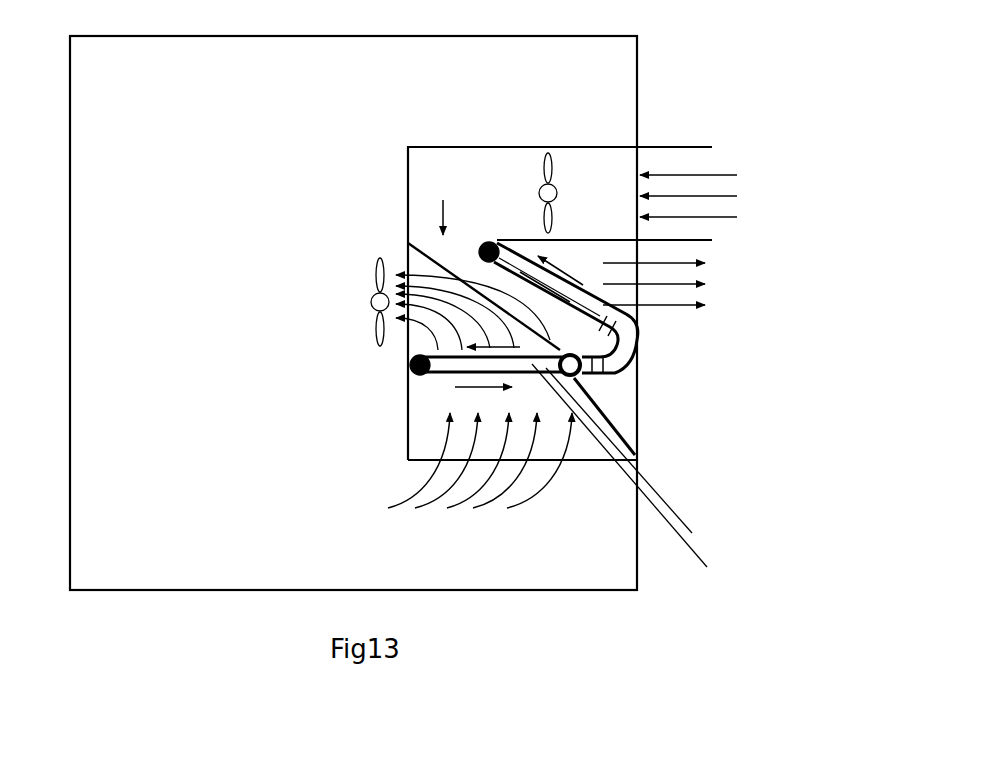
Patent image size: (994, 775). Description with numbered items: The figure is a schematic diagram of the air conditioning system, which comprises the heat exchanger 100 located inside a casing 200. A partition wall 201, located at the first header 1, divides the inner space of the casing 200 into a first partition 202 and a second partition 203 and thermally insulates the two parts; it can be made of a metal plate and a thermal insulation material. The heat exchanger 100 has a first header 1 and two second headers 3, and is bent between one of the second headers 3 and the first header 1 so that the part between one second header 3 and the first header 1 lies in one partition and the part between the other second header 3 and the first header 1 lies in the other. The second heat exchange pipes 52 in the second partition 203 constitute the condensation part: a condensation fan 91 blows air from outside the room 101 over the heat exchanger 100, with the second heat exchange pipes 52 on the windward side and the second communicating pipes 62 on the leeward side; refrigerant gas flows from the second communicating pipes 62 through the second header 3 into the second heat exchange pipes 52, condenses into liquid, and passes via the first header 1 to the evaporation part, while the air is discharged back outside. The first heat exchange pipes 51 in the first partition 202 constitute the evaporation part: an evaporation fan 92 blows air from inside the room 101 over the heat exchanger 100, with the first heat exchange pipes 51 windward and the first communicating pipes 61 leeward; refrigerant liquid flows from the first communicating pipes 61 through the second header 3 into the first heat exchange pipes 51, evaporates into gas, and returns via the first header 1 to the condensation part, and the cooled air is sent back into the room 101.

The room 101 is at (70, 183).
The casing 200 is at (418, 147).
The second partition 203 is at (445, 180).
The partition wall 201 is at (414, 250).
The first partition 202 is at (425, 413).
The evaporation fan 92 is at (376, 325).
The condensation fan 91 is at (551, 190).
The heat exchanger 100 is at (625, 385).
The second communicating pipes 62 is at (521, 272).
The second heat exchange pipes 52 is at (510, 266).
The second headers 3 is at (488, 246).
The first header 1 is at (587, 377).
The first communicating pipes 61 is at (633, 460).
The first heat exchange pipes 51 is at (624, 478).